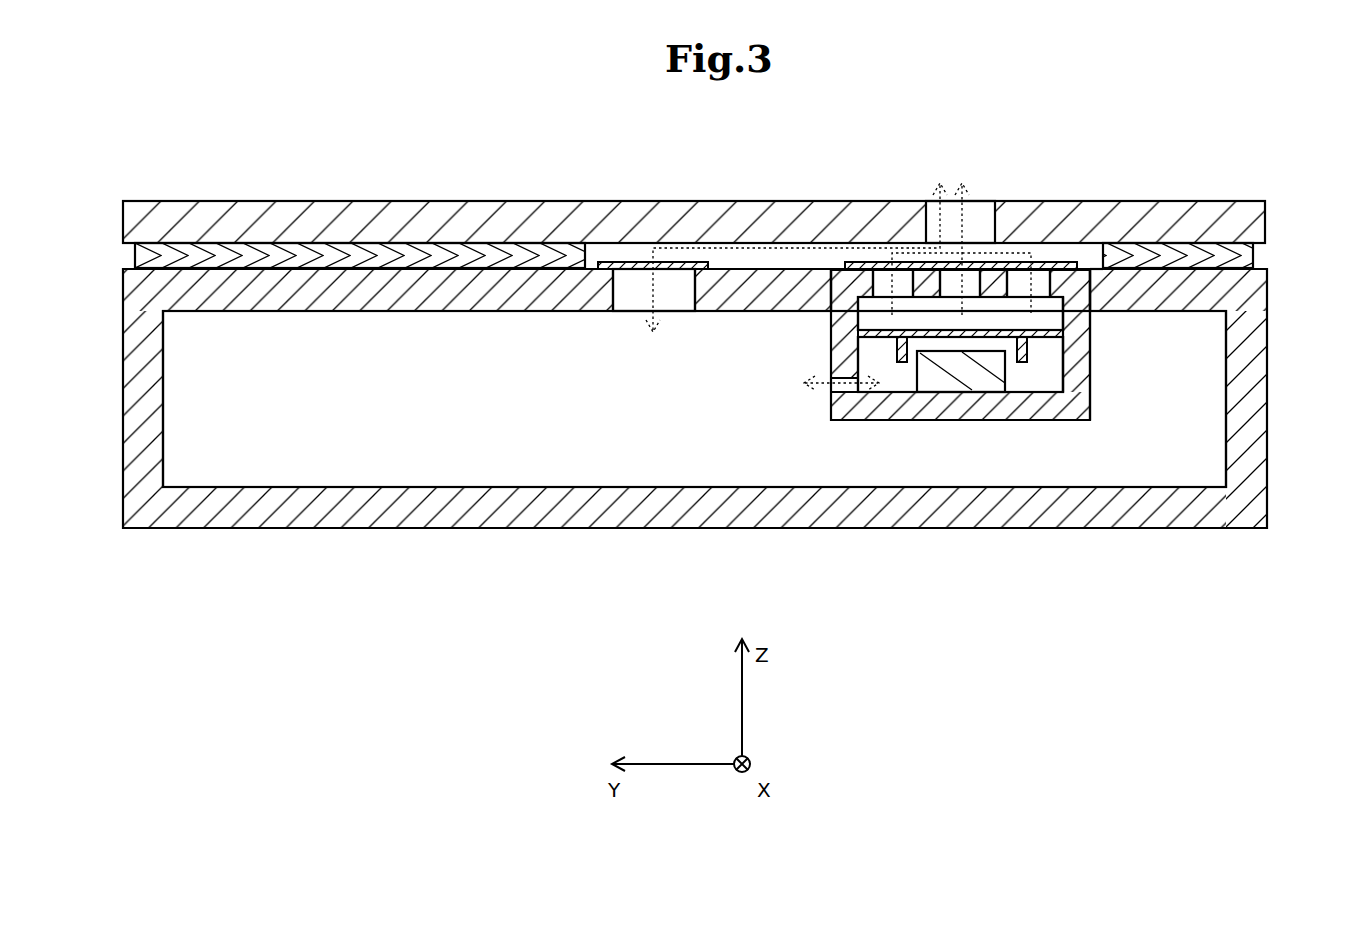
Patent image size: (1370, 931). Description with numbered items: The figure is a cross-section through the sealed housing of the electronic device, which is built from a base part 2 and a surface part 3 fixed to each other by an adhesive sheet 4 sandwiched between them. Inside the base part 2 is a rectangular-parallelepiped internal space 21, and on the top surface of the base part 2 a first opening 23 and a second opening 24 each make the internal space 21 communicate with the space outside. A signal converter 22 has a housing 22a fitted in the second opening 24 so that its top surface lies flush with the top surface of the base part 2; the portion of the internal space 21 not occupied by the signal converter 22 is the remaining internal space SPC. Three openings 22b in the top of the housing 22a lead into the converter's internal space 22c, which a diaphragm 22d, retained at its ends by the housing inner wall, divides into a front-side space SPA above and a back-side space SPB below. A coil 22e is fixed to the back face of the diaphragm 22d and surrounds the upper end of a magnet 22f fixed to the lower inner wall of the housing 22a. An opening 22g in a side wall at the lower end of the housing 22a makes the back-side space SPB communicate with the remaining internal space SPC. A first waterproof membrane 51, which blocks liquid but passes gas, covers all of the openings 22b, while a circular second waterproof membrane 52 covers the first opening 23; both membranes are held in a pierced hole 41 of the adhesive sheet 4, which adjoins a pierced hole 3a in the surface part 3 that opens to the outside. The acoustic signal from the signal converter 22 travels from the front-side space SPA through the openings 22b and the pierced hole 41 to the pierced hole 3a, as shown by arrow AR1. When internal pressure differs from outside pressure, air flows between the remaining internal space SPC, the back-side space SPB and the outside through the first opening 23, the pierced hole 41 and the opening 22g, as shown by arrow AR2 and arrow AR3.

The base part 2 is at (216, 528).
The internal space 21 is at (410, 452).
The signal converter 22 is at (1095, 403).
The housing 22a is at (1093, 392).
The openings 22b is at (890, 295).
The internal space 22c is at (1056, 347).
The diaphragm 22d is at (935, 362).
The coil 22e is at (899, 365).
The magnet 22f is at (1012, 375).
The opening 22g is at (857, 395).
The first opening 23 is at (624, 294).
The second opening 24 is at (838, 283).
The surface part 3 is at (225, 201).
The pierced hole 3a is at (990, 207).
The adhesive sheet 4 is at (135, 254).
The pierced hole 41 is at (1092, 256).
The first waterproof membrane 51 is at (1093, 258).
The second waterproof membrane 52 is at (596, 262).
The front-side space SPA is at (1050, 317).
The back-side space SPB is at (1053, 370).
The remaining internal space SPC is at (320, 433).
The arrow AR1 is at (947, 252).
The arrow AR2 is at (752, 258).
The arrow AR3 is at (823, 400).